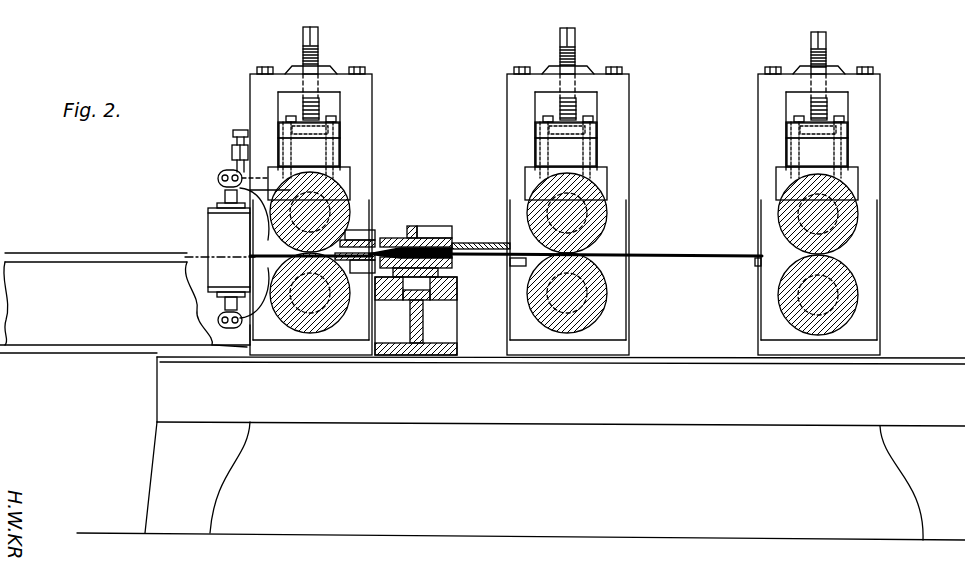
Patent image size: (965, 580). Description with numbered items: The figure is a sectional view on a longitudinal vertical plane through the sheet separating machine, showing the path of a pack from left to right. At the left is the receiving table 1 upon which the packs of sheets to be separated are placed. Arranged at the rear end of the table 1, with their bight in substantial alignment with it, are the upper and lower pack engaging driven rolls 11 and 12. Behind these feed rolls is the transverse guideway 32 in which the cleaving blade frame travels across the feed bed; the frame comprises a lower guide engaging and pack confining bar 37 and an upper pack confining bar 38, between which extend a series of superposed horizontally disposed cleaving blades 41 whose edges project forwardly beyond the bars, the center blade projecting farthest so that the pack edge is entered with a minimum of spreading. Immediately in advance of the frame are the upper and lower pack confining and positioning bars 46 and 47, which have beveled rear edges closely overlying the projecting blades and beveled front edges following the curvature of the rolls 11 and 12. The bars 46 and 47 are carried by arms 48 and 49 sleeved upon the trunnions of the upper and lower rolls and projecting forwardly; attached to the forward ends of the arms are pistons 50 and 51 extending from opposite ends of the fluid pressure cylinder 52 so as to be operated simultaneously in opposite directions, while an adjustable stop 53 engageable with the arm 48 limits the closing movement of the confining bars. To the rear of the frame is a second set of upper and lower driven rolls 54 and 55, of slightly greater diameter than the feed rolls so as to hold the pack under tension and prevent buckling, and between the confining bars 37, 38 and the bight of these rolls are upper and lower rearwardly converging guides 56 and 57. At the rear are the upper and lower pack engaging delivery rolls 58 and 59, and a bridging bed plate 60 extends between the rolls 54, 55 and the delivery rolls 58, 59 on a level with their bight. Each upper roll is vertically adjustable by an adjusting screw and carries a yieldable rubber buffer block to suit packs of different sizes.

The receiving table 1 is at (138, 264).
The upper pack engaging driven roll 11 is at (350, 207).
The lower pack engaging driven roll 12 is at (298, 330).
The transverse guideway 32 is at (430, 300).
The lower guide engaging and pack confining bar 37 is at (447, 267).
The upper pack confining bar 38 is at (452, 234).
The cleaving blades 41 is at (395, 238).
The upper pack confining and positioning bar 46 is at (370, 231).
The lower pack confining and positioning bar 47 is at (362, 270).
The arm 48 is at (258, 176).
The arm 49 is at (262, 328).
The piston 50 is at (224, 194).
The piston 51 is at (226, 306).
The fluid pressure cylinder 52 is at (222, 234).
The adjustable stop 53 is at (232, 142).
The upper driven roll 54 is at (603, 218).
The lower driven roll 55 is at (605, 302).
The upper rearwardly converging guide 56 is at (519, 242).
The lower rearwardly converging guide 57 is at (514, 268).
The upper pack engaging delivery roll 58 is at (852, 230).
The lower pack engaging delivery roll 59 is at (852, 297).
The bridging bed plate 60 is at (698, 256).